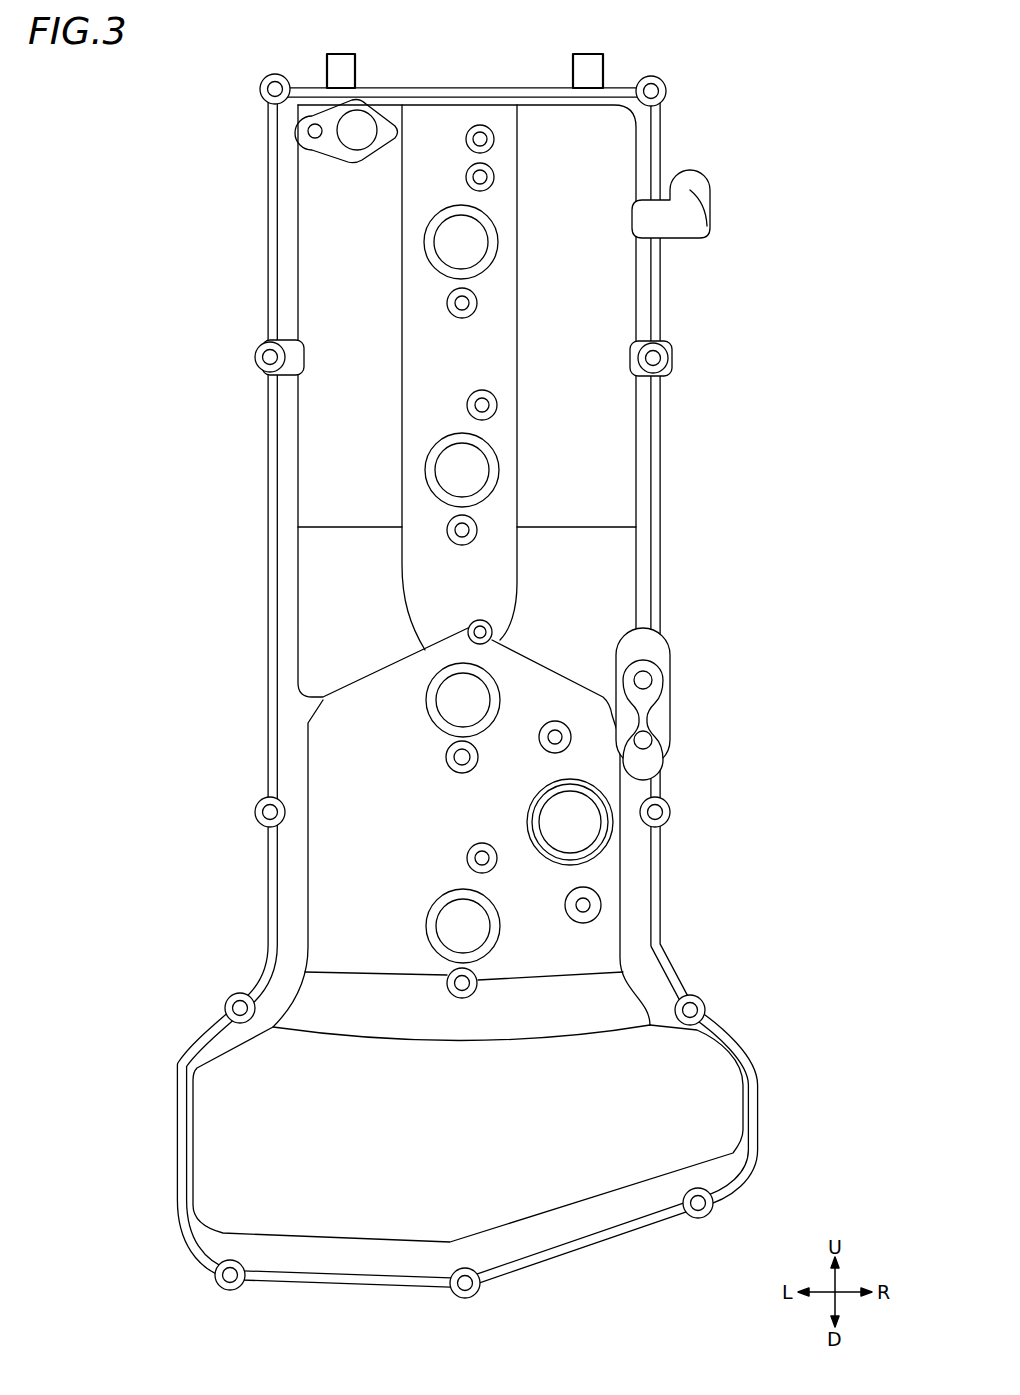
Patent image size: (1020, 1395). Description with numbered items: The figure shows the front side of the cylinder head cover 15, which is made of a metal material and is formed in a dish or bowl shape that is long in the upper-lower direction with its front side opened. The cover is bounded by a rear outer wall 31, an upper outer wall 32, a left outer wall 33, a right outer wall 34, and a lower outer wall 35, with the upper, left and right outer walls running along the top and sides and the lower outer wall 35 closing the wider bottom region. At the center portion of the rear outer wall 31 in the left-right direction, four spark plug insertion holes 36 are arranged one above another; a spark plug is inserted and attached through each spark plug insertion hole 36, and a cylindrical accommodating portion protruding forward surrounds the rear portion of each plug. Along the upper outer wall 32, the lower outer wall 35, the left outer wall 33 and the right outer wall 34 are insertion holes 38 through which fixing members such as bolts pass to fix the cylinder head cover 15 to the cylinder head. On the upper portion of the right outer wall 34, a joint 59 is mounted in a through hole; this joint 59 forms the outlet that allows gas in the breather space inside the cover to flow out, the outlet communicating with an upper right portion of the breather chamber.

The cylinder head cover 15 is at (236, 52).
The rear outer wall 31 is at (583, 405).
The upper outer wall 32 is at (442, 88).
The left outer wall 33 is at (267, 575).
The right outer wall 34 is at (660, 568).
The lower outer wall 35 is at (518, 1272).
The spark plug insertion hole 36 is at (458, 262).
The insertion hole 38 is at (276, 74).
The joint 59 is at (700, 190).